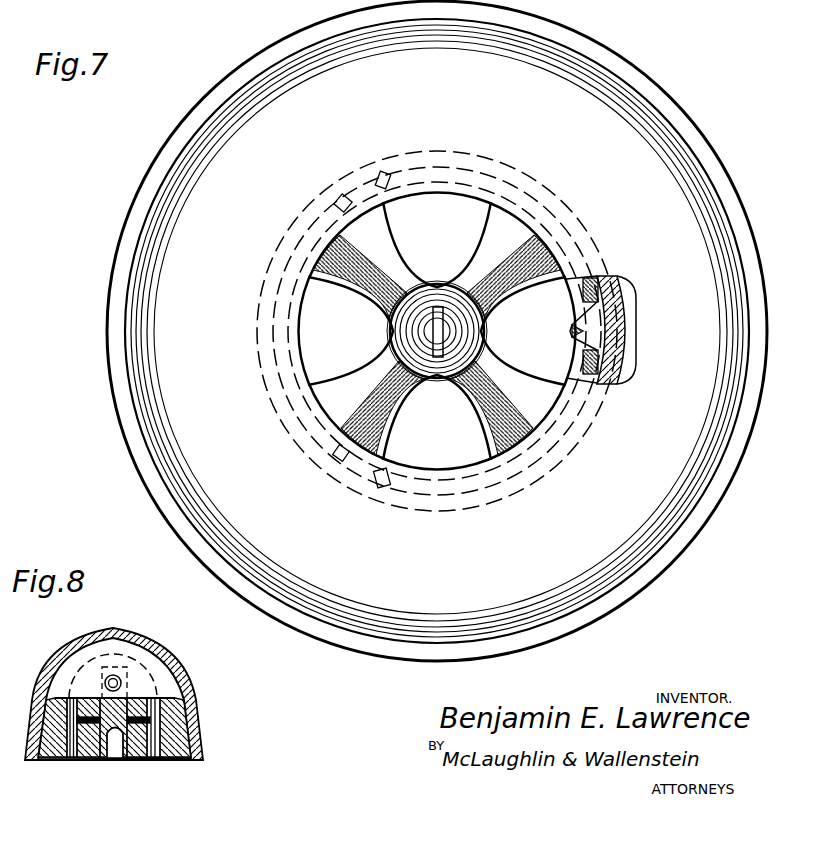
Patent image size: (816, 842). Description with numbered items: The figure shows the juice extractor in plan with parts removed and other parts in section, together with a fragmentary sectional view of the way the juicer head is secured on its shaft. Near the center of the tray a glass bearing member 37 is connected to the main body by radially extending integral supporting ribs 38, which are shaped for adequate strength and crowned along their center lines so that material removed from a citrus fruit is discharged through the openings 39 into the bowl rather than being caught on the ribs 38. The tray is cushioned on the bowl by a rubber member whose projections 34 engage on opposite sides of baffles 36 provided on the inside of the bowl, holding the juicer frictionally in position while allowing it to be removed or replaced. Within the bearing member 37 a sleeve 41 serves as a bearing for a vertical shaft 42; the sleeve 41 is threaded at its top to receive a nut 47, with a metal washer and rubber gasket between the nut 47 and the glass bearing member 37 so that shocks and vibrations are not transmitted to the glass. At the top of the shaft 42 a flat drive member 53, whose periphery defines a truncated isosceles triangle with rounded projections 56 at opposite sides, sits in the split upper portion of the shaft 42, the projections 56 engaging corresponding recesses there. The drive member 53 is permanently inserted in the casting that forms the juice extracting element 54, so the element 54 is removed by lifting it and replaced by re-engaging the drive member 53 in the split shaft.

In FIG. 7, the projections 34 is at (380, 173).
In FIG. 7, the baffles 36 is at (592, 330).
In FIG. 7, the bearing member 37 is at (437, 288).
In FIG. 8, the bearing member 37 is at (143, 757).
In FIG. 7, the supporting ribs 38 is at (340, 253).
In FIG. 7, the openings 39 is at (467, 222).
In FIG. 8, the sleeve 41 is at (97, 760).
In FIG. 8, the vertical shaft 42 is at (113, 753).
In FIG. 8, the nut 47 is at (160, 712).
In FIG. 7, the drive member 53 is at (418, 316).
In FIG. 8, the drive member 53 is at (147, 660).
In FIG. 8, the juice extracting element 54 is at (140, 632).
In FIG. 8, the rounded projections 56 is at (108, 680).